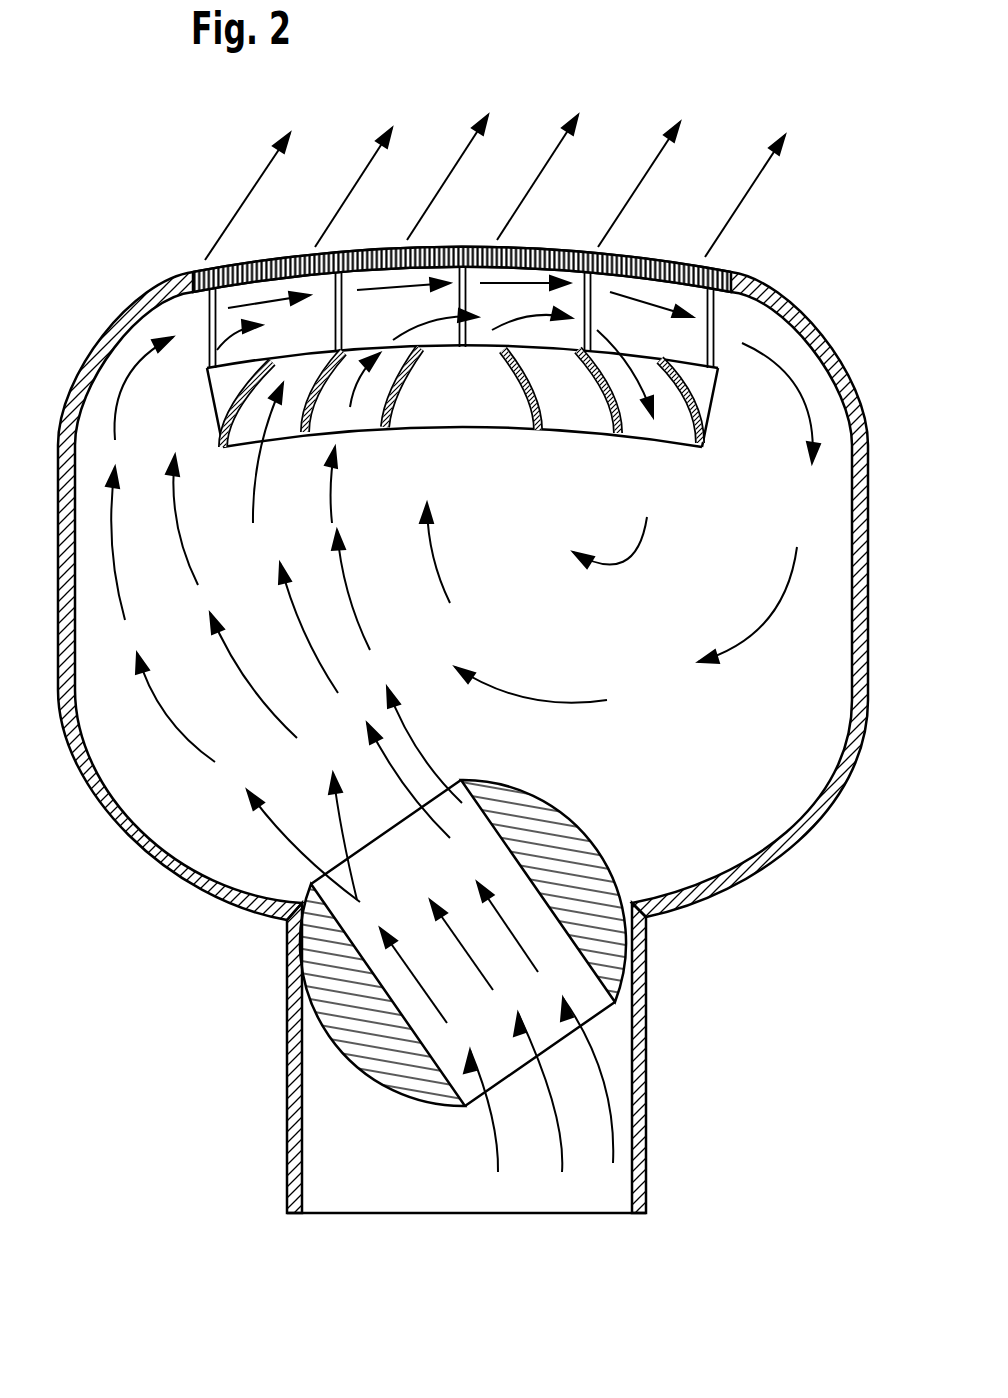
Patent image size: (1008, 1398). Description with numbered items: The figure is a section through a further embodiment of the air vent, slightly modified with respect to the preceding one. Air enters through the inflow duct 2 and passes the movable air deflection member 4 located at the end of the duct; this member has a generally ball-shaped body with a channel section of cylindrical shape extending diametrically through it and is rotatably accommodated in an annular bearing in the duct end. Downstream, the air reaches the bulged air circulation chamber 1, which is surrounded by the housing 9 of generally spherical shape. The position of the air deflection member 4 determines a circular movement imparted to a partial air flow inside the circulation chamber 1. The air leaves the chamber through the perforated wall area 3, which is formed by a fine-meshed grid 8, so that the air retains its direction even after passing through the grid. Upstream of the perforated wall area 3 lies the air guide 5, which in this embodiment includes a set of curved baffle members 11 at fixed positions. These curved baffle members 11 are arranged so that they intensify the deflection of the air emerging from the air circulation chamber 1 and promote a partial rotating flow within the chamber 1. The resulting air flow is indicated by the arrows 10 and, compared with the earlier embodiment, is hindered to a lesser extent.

The air circulation chamber 1 is at (538, 608).
The inflow duct 2 is at (317, 1168).
The perforated wall area 3 is at (562, 250).
The air deflection member 4 is at (577, 873).
The air guide 5 is at (573, 418).
The fine-meshed grid 8 is at (365, 262).
The housing 9 is at (858, 578).
The arrows 10 is at (307, 640).
The curved baffle members 11 is at (217, 407).